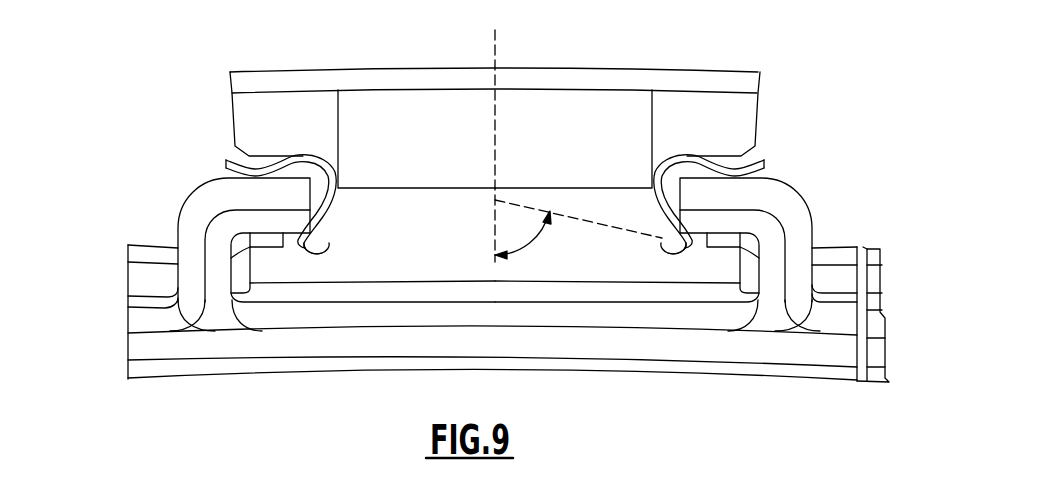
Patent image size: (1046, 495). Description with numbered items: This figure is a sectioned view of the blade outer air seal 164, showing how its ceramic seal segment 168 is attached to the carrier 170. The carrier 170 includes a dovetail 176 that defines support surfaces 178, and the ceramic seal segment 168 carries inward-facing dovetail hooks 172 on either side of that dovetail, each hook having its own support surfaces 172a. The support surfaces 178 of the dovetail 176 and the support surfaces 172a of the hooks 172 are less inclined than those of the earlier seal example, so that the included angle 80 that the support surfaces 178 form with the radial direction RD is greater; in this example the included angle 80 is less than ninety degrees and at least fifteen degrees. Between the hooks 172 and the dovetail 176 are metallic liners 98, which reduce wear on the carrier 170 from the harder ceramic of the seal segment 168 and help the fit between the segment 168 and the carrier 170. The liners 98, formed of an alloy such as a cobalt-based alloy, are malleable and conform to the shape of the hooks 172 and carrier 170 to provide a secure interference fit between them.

The seal 164 is at (864, 105).
The ceramic seal segment 168 is at (122, 355).
The carrier 170 is at (757, 72).
The inward-facing dovetail hooks 172 is at (187, 189).
The support surfaces 172a is at (318, 250).
The dovetail 176 is at (296, 273).
The support surfaces 178 is at (693, 231).
The metallic liners 98 is at (227, 161).
The included angle 80 is at (528, 225).
The radial direction RD is at (495, 120).